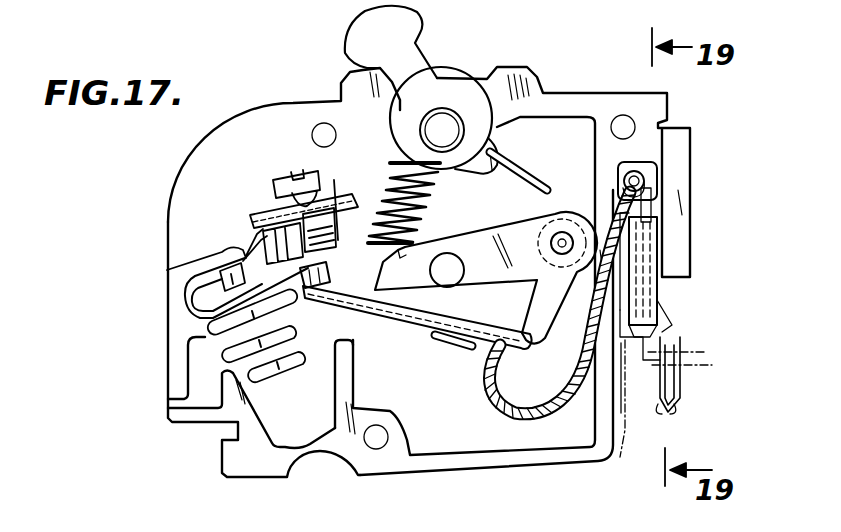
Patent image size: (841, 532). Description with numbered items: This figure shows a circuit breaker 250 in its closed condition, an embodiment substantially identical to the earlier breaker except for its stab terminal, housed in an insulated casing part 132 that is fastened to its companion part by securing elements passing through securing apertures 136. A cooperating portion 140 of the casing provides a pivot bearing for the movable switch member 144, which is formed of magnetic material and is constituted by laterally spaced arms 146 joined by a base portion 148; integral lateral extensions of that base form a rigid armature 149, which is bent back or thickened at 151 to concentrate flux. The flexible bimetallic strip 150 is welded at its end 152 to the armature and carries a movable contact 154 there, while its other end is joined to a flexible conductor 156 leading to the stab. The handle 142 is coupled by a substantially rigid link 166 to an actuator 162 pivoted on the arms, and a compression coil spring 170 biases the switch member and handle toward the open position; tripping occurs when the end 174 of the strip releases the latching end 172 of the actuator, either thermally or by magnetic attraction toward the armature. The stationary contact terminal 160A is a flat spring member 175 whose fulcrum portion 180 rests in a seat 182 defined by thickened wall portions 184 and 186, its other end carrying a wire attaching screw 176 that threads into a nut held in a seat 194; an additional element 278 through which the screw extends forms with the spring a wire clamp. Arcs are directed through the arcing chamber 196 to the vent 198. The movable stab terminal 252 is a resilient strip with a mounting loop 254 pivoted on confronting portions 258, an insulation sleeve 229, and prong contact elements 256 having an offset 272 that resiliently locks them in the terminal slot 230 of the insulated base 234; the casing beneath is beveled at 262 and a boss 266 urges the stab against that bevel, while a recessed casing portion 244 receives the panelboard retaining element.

The insulated casing part 132 is at (537, 70).
The securing apertures 136 is at (376, 449).
The cooperating portion 140 is at (447, 253).
The handle 142 is at (408, 60).
The movable switch member 144 is at (478, 232).
The arms 146 is at (522, 230).
The base portion 148 is at (395, 320).
The rigid armature 149 is at (398, 348).
The flexible bimetallic strip 150 is at (454, 327).
The bent back portion of armature 151 is at (453, 346).
The end of thermal strip 152 is at (330, 298).
The movable contact 154 is at (311, 307).
The flexible conductor 156 is at (505, 403).
The stationary contact terminal 160A is at (247, 239).
The actuator 162 is at (549, 180).
The link 166 is at (520, 178).
The compression coil spring 170 is at (433, 205).
The latching end of actuator 172 is at (540, 335).
The end of thermal strip 174 is at (530, 322).
The flat spring member 175 is at (246, 288).
The wire attaching screw 176 is at (300, 170).
The fulcrum portion 180 is at (197, 308).
The seat 182 is at (200, 293).
The thickened wall portion 184 is at (220, 332).
The thickened wall portion 186 is at (205, 255).
The seat 194 is at (413, 385).
The arcing chamber 196 is at (283, 403).
The vent 198 is at (178, 402).
The insulation sleeve 229 is at (662, 310).
The terminal slot 230 is at (696, 355).
The insulated base 234 is at (621, 467).
The recessed casing portion 244 is at (230, 432).
The circuit breaker 250 is at (563, 80).
The movable stab terminal 252 is at (686, 386).
The mounting loop 254 is at (648, 170).
The prong contact elements 256 is at (675, 419).
The confronting portions 258 is at (650, 183).
The beveled portion 262 is at (638, 398).
The boss 266 is at (660, 250).
The offset 272 is at (670, 340).
The additional element 278 is at (280, 190).